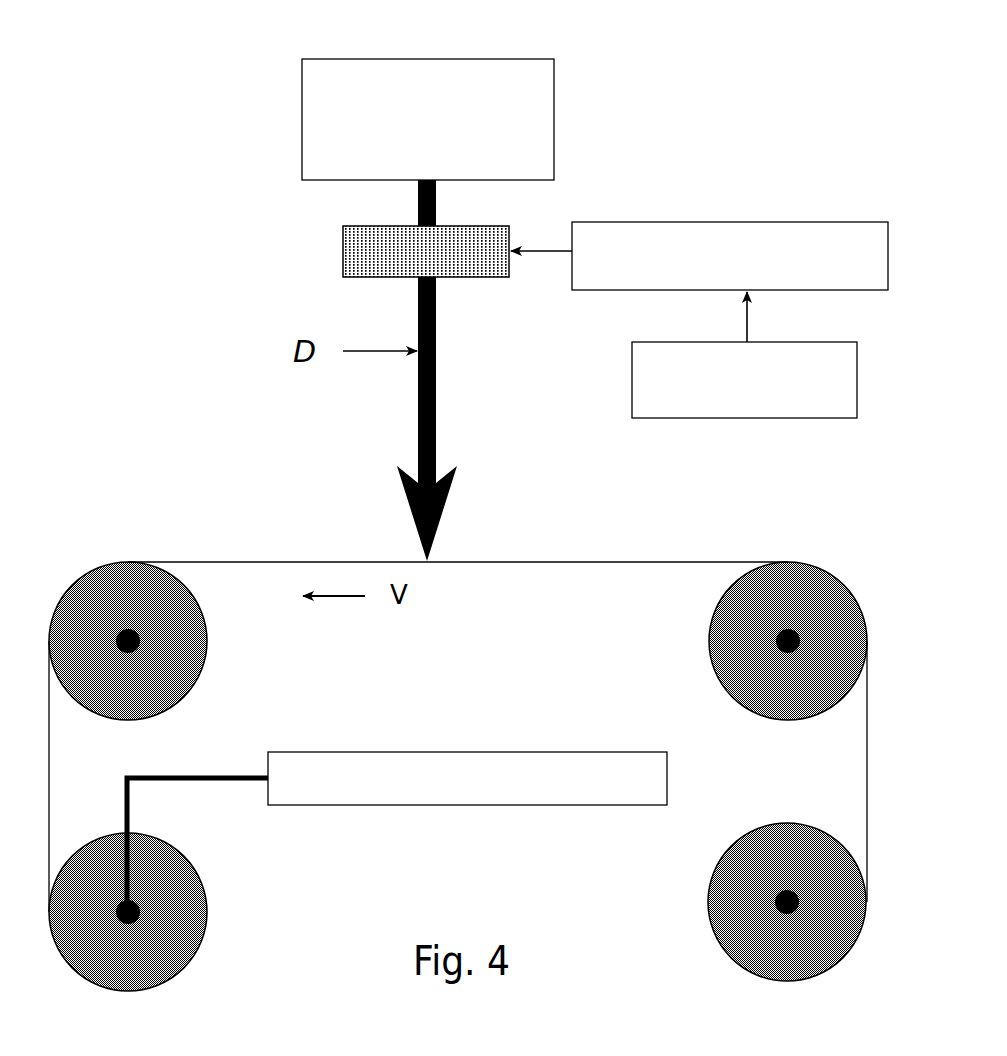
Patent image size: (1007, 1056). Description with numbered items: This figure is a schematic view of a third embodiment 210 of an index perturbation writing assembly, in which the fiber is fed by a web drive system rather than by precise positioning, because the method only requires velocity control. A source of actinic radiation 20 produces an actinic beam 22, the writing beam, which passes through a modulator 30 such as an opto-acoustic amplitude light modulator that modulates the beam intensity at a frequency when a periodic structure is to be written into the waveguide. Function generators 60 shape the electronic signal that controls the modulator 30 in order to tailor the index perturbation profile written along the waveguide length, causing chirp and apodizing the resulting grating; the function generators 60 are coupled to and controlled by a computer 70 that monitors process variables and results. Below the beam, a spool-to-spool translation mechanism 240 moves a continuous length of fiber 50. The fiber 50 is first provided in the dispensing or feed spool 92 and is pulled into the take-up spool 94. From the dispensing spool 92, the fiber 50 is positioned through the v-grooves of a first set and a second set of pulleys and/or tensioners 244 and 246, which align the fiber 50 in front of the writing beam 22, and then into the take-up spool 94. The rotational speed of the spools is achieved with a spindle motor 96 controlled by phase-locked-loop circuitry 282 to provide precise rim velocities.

The third embodiment of index perturbation writing assembly 210 is at (118, 85).
The source of actinic radiation 20 is at (561, 110).
The actinic beam 22 is at (437, 351).
The modulator 30 is at (321, 248).
The function generator 60 is at (747, 232).
The computer 70 is at (832, 400).
The spool-to-spool translation mechanism 240 is at (113, 483).
The fiber 50 is at (513, 563).
The second set of pulleys and/or tensioners 246 is at (193, 655).
The first set of pulleys and/or tensioners 244 is at (727, 660).
The take-up spool 94 is at (175, 899).
The spindle motor 96 is at (137, 922).
The dispensing spool 92 is at (762, 942).
The phase-locked-loop circuitry 282 is at (433, 760).